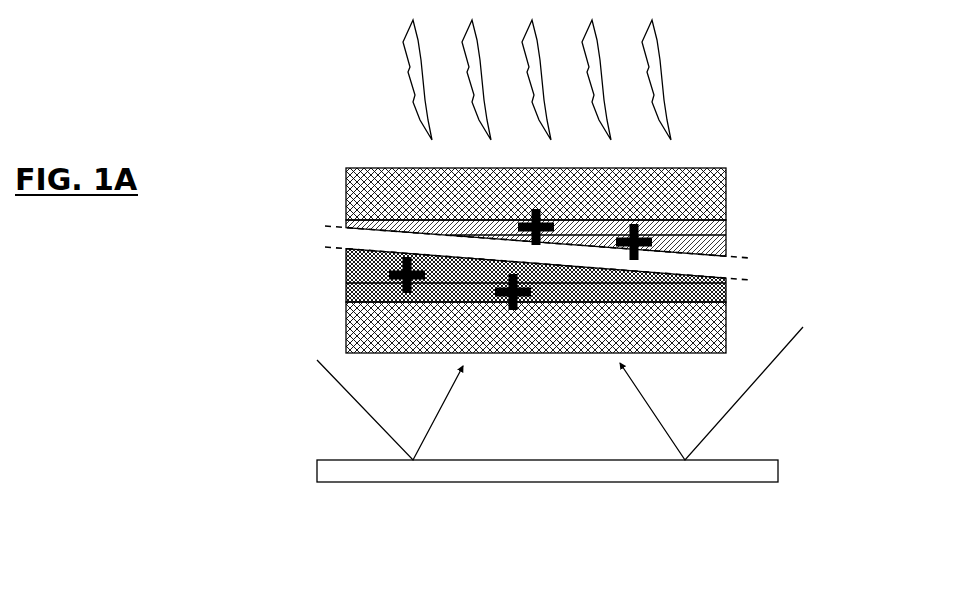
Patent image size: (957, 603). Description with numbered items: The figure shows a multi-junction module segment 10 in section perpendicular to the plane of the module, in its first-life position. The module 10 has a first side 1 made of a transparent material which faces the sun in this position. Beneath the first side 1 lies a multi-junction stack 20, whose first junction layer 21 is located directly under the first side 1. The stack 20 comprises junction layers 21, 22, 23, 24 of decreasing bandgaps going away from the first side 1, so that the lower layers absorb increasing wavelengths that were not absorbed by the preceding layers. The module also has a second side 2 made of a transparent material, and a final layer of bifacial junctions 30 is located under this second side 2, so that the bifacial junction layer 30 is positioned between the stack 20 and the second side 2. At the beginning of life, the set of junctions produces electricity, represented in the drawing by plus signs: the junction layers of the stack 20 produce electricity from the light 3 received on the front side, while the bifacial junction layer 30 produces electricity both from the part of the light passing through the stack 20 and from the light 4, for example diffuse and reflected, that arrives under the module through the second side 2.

The multi-junction module segment 10 is at (261, 125).
The first side 1 is at (346, 192).
The second side 2 is at (728, 323).
The light 3 is at (658, 77).
The diffuse and reflected light 4 is at (646, 407).
The multi-junction stack 20 is at (320, 218).
The first junction layer 21 is at (727, 228).
The junction layer 22 is at (727, 247).
The junction layer 23 is at (345, 283).
The junction layer 24 is at (727, 274).
The bifacial junction layer 30 is at (346, 290).